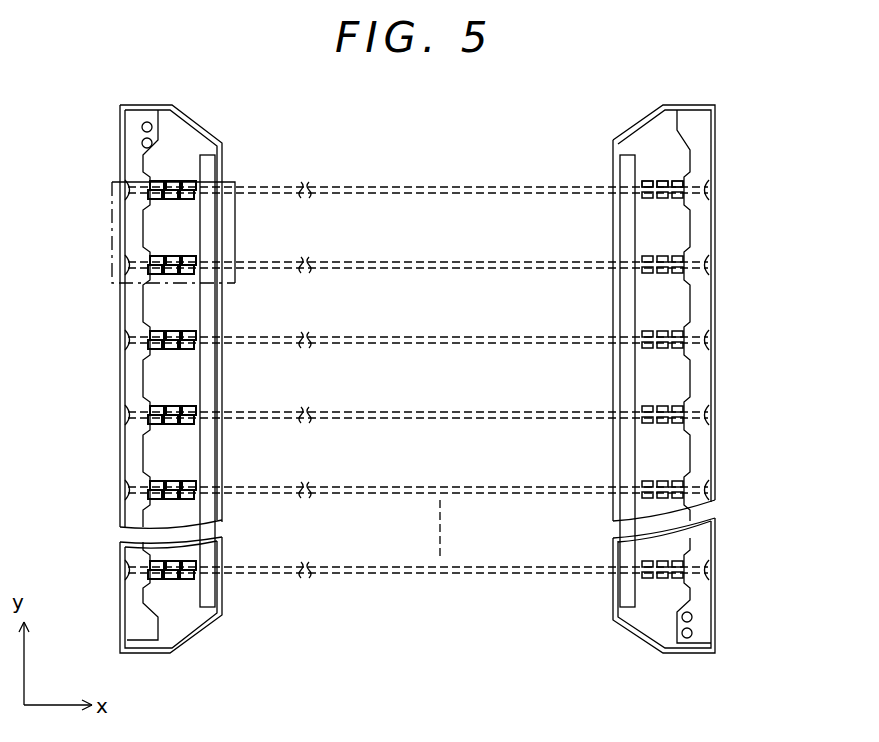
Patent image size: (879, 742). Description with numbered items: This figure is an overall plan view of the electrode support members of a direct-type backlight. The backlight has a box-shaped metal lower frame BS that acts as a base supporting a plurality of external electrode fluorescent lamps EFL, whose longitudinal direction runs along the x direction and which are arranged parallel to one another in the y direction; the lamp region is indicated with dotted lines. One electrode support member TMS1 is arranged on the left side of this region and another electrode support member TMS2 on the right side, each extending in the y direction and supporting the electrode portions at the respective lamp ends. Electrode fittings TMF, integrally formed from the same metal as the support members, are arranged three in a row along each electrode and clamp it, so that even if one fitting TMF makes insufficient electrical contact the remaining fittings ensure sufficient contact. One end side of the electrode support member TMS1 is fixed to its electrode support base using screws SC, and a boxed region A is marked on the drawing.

The electrode support member TMS1 is at (146, 352).
The electrode support member TMS2 is at (698, 383).
The screws SC is at (140, 143).
The electrode fittings TMF is at (648, 180).
The external electrode fluorescent lamps EFL is at (397, 187).
The lower frame BS is at (350, 613).
The region A is at (159, 228).